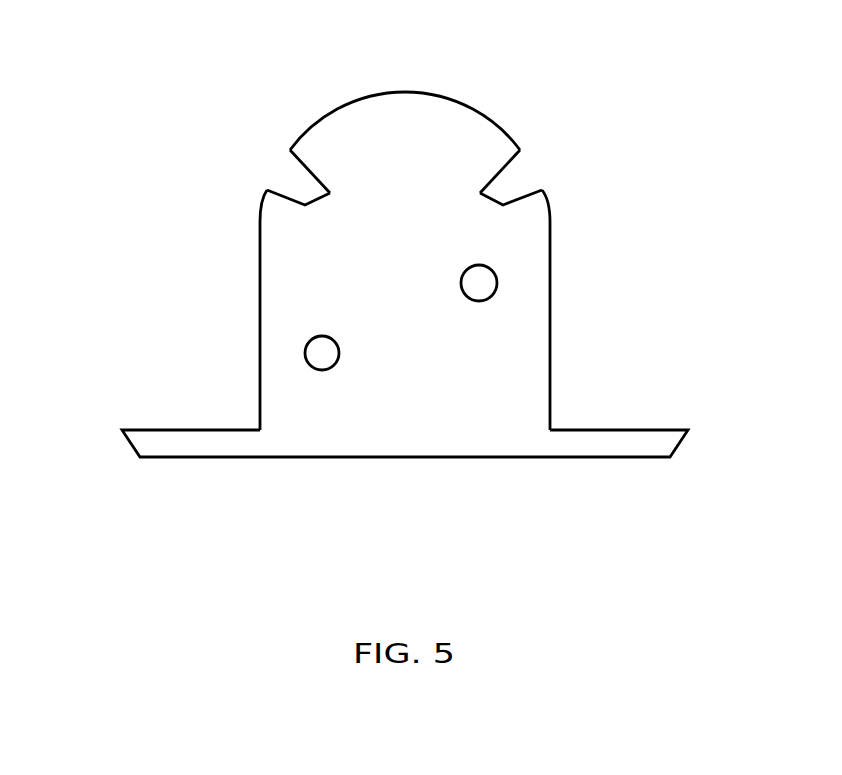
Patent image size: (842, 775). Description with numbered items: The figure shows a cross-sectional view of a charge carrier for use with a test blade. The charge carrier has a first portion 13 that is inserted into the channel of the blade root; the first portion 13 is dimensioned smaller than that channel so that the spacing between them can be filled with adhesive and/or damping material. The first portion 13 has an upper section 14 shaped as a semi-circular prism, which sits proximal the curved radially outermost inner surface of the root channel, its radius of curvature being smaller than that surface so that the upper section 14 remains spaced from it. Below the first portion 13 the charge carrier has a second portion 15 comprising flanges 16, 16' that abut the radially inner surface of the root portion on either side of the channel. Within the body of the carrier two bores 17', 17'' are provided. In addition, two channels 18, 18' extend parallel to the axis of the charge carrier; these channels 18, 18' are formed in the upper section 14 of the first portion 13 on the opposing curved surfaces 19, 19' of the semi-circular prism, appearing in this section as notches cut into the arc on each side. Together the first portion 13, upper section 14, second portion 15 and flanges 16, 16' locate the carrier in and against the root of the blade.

The first portion 13 is at (152, 168).
The upper section 14 is at (418, 162).
The second portion 15 is at (678, 495).
The flange 16 is at (211, 474).
The flange 16' is at (598, 410).
The bore 17' is at (263, 339).
The bore 17'' is at (543, 267).
The channel 18 is at (267, 164).
The channel 18' is at (547, 166).
The curved surface 19 is at (290, 134).
The curved surface 19' is at (523, 136).